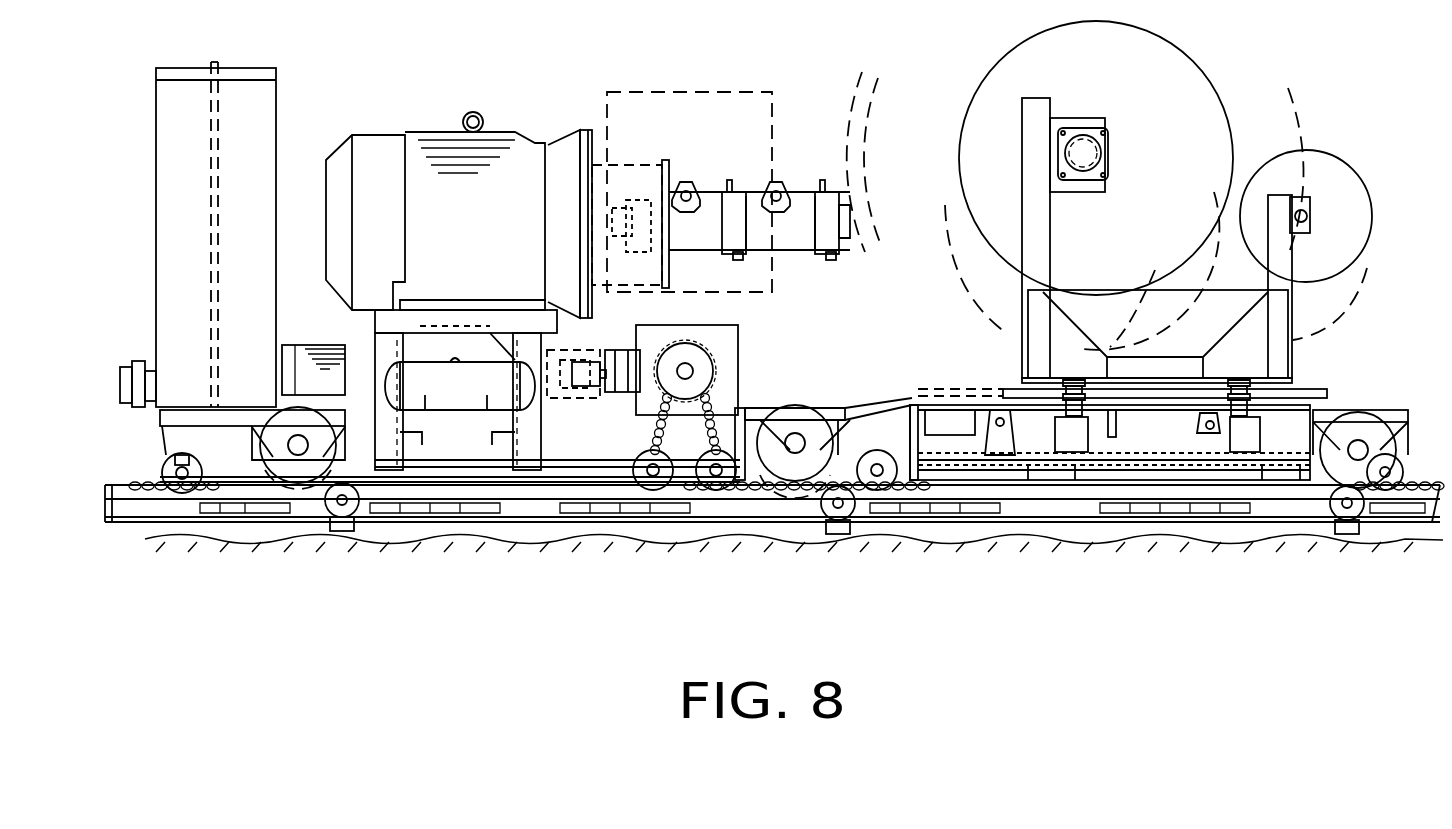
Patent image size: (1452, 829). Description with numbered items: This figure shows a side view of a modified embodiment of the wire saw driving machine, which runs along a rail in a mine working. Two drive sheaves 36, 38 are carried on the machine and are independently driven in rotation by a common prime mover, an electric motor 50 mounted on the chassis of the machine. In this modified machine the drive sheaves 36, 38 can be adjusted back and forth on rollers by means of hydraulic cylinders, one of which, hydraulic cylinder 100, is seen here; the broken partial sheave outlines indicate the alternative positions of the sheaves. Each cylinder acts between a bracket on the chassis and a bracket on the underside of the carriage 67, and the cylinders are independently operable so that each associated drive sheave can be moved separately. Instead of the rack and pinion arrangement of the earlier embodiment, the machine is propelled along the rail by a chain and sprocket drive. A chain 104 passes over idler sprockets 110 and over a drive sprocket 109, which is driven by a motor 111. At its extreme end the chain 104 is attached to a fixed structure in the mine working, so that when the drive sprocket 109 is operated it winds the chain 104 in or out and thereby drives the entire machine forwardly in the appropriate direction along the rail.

The drive sheave 36 is at (1192, 60).
The drive sheave 38 is at (1183, 300).
The electric motor 50 is at (490, 243).
The carriage 67 is at (1152, 470).
The hydraulic cylinder 100 is at (947, 423).
The chain 104 is at (210, 490).
The drive sprocket 109 is at (703, 380).
The idler sprocket 110 is at (652, 487).
The motor 111 is at (327, 327).